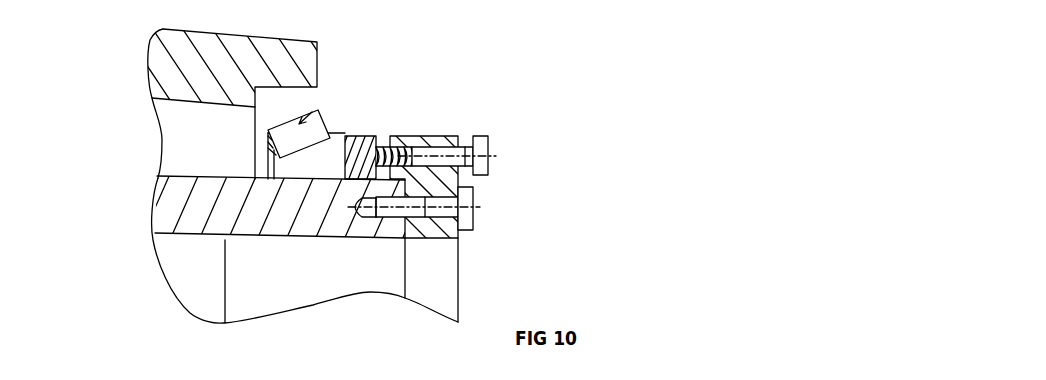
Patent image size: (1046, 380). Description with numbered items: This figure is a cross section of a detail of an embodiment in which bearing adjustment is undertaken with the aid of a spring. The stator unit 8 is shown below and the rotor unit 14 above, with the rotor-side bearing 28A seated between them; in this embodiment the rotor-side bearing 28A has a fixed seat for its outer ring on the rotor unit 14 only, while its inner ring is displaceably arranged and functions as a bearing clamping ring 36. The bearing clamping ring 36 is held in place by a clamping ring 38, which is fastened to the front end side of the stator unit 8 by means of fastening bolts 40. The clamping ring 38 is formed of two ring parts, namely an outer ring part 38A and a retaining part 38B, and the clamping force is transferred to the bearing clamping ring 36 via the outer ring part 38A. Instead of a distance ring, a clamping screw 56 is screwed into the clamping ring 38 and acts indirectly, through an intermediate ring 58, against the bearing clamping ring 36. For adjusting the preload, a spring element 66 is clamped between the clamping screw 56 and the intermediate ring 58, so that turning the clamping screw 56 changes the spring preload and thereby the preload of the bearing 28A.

The stator unit 8 is at (162, 212).
The rotor unit 14 is at (158, 70).
The rotor-side bearing 28A is at (318, 108).
The bearing clamping ring 36 is at (328, 160).
The clamping ring 38 is at (463, 162).
The outer ring part 38A is at (427, 136).
The retaining part 38B is at (447, 237).
The fastening bolts 40 is at (467, 212).
The clamping screw 56 is at (488, 150).
The intermediate ring 58 is at (350, 137).
The spring element 66 is at (405, 145).